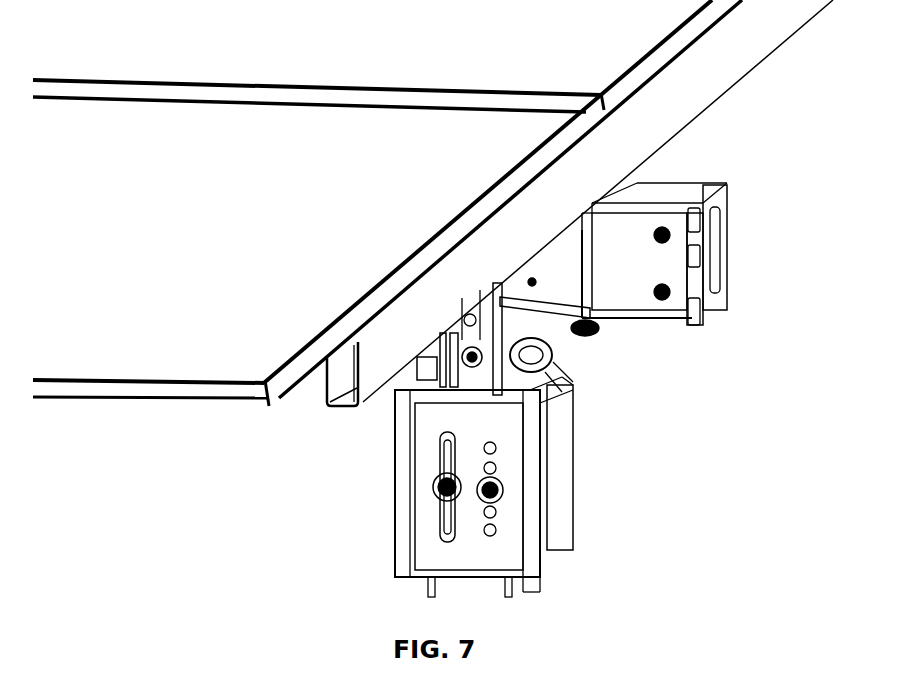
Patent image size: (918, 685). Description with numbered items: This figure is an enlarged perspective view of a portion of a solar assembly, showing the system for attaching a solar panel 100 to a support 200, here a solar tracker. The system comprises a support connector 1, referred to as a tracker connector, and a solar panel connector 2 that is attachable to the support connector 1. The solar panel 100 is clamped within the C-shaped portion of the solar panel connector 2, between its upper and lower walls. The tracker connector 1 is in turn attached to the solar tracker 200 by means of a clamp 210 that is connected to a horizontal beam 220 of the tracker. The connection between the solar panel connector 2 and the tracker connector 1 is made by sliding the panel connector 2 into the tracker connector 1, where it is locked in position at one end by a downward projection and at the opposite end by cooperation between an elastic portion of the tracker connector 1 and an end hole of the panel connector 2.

The solar panel 100 is at (182, 345).
The support connector 1 is at (372, 372).
The solar panel connector 2 is at (287, 383).
The support 200 is at (622, 525).
The clamp 210 is at (603, 314).
The horizontal beam 220 is at (650, 274).